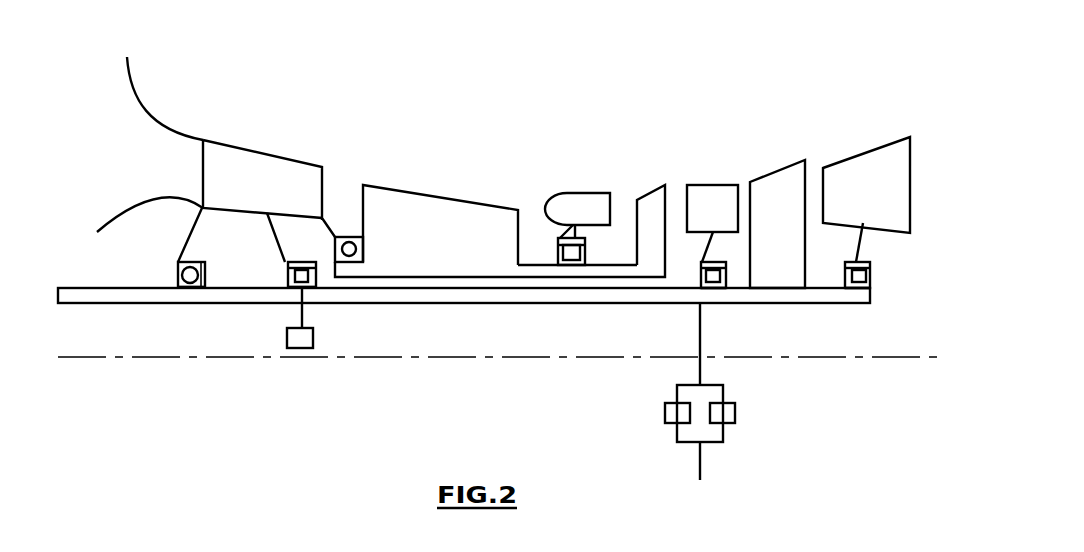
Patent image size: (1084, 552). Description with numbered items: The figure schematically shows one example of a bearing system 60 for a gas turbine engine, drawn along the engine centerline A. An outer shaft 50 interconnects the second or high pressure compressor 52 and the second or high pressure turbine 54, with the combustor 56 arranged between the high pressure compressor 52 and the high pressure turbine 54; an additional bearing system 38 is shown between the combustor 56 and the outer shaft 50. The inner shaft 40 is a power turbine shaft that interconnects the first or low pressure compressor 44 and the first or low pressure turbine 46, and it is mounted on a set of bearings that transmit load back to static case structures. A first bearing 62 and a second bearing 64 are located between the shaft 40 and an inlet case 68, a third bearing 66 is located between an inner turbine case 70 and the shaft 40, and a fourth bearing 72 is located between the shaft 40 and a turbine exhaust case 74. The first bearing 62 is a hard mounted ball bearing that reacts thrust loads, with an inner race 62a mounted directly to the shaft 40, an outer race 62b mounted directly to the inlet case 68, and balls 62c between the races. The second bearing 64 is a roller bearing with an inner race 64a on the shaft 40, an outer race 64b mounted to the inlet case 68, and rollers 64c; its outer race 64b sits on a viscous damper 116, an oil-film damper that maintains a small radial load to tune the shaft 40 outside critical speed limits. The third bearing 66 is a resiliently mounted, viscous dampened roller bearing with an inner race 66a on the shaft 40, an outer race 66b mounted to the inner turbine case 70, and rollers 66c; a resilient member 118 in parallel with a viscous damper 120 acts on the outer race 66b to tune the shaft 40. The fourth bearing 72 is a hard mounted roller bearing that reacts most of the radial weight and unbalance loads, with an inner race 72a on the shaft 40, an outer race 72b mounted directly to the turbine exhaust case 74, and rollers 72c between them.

The additional bearing systems 38 is at (585, 252).
The inner shaft 40 is at (572, 295).
The first (or low) pressure compressor 44 is at (245, 150).
The first (or low) pressure turbine 46 is at (766, 176).
The outer shaft 50 is at (540, 265).
The second (or high) pressure compressor 52 is at (428, 194).
The second (or high) pressure turbine 54 is at (646, 195).
The combustor 56 is at (583, 192).
The bearing system 60 is at (148, 262).
The first bearing 62 is at (184, 290).
The inner race 62a is at (196, 289).
The outer race 62b is at (203, 262).
The balls 62c is at (205, 282).
The second bearing 64 is at (314, 290).
The inner race 64a is at (313, 290).
The outer race 64b is at (298, 262).
The rollers 64c is at (319, 270).
The third bearing 66 is at (715, 290).
The inner race 66a is at (723, 286).
The outer race 66b is at (717, 262).
The rollers 66c is at (701, 277).
The inlet case 68 is at (127, 151).
The inner turbine case 70 is at (712, 185).
The fourth bearing 72 is at (857, 290).
The inner race 72a is at (871, 292).
The outer race 72b is at (856, 262).
The rollers 72c is at (870, 277).
The turbine exhaust case 74 is at (866, 166).
The viscous damper 116 is at (303, 348).
The resilient member 118 is at (670, 411).
The viscous damper 120 is at (728, 412).
The engine central longitudinal axis A is at (937, 357).